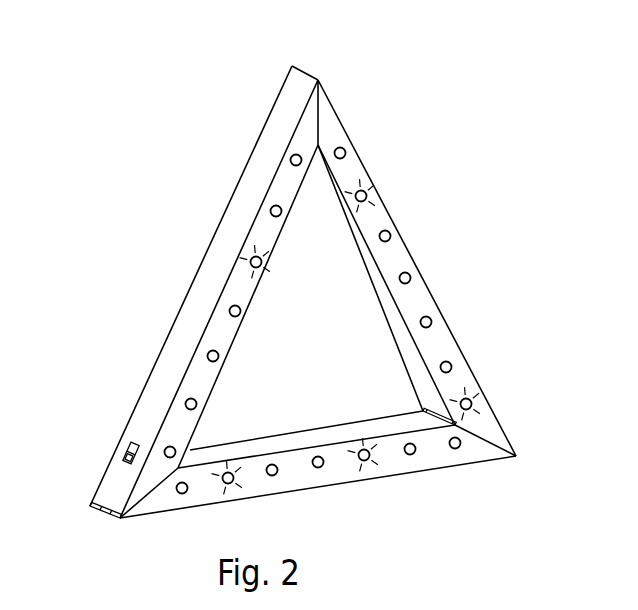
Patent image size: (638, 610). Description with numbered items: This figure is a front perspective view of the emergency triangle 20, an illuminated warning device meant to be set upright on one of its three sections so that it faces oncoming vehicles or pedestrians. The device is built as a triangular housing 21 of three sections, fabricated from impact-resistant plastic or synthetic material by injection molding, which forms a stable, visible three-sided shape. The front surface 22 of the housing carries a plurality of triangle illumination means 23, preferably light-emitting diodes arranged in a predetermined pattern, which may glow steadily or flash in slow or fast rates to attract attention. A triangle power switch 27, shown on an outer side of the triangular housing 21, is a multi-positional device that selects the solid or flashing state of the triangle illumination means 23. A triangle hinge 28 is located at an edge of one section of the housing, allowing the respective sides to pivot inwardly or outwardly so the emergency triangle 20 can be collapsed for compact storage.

The emergency triangle 20 is at (120, 100).
The triangular housing 21 is at (286, 105).
The front surface 22 is at (477, 457).
The triangle illumination means 23 is at (412, 445).
The triangle power switch 27 is at (125, 456).
The triangle hinge 28 is at (95, 513).